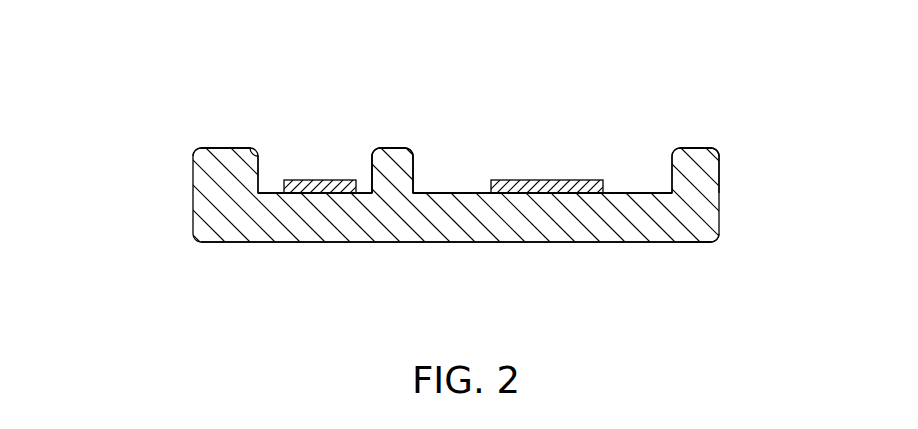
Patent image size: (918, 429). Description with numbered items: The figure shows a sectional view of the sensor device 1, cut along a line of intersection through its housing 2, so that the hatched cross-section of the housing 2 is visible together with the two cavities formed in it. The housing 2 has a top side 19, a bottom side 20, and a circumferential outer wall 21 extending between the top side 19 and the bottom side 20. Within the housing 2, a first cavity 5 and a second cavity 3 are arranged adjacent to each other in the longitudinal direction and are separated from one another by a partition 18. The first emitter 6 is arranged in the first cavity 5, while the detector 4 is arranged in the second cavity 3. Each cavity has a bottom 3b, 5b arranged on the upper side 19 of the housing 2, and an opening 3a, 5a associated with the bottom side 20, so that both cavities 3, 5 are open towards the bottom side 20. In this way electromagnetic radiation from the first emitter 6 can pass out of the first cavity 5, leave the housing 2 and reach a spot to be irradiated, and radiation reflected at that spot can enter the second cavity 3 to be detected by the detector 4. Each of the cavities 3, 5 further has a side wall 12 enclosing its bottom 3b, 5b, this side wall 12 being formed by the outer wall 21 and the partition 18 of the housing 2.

The sensor device 1 is at (148, 88).
The housing 2 is at (594, 218).
The second cavity 3 is at (638, 182).
The opening 3a is at (449, 168).
The bottom 3b is at (457, 197).
The detector 4 is at (547, 180).
The first cavity 5 is at (362, 190).
The opening 5a is at (272, 148).
The bottom 5b is at (270, 197).
The first emitter 6 is at (320, 180).
The side wall 12 is at (207, 103).
The partition 18 is at (405, 158).
The top side 19 is at (722, 234).
The bottom side 20 is at (722, 155).
The circumferential outer wall 21 is at (218, 158).